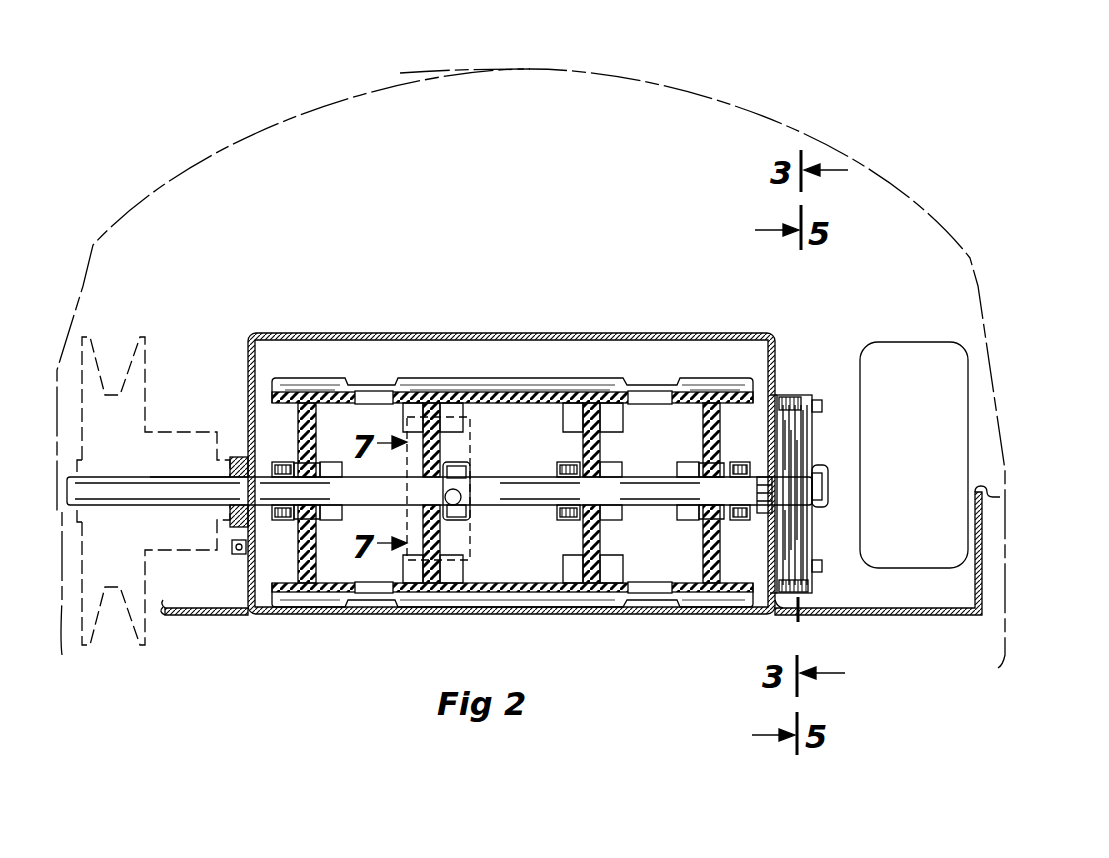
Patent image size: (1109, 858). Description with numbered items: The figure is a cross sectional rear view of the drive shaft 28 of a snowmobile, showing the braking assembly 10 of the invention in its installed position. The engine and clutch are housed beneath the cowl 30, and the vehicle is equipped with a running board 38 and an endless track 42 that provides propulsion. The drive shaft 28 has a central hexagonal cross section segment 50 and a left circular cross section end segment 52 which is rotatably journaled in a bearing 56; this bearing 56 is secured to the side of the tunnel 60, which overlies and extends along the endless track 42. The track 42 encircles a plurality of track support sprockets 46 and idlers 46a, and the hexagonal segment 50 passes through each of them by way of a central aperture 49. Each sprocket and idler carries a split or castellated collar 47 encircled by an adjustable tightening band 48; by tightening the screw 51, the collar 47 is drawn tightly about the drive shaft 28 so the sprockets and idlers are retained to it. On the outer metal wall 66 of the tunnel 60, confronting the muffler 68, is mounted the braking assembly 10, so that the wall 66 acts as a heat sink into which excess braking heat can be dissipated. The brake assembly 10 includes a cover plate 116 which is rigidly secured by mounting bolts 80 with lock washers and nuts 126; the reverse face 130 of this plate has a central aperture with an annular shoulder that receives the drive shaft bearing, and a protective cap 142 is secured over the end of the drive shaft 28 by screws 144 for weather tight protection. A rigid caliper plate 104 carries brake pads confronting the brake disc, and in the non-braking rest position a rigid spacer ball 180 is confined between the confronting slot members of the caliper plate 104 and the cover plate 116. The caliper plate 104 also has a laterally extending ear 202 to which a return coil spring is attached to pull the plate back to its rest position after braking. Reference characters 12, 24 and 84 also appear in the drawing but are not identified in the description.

The braking assembly 10 is at (805, 378).
The cabinet enclosure 12 is at (745, 72).
The drive pulley 24 is at (147, 352).
The drive shaft 28 is at (184, 468).
The cowl 30 is at (440, 70).
The running board 38 is at (883, 617).
The endless track 42 is at (525, 595).
The track support sprockets 46 is at (590, 545).
The idlers 46a is at (318, 434).
The split collar 47 is at (557, 472).
The adjustable tightening band 48 is at (345, 462).
The central aperture 49 is at (650, 495).
The central hexagonal cross section segment 50 is at (648, 503).
The tightening screw 51 is at (445, 498).
The left circular cross section end segment 52 is at (127, 506).
The bearing 56 is at (228, 513).
The tunnel 60 is at (476, 326).
The outer metal wall 66 is at (777, 352).
The muffler 68 is at (935, 342).
The mounting bolts 80 is at (818, 572).
The shaft bearing nut 84 is at (757, 517).
The caliper plate 104 is at (778, 612).
The cover plate 116 is at (830, 422).
The nuts 126 is at (818, 400).
The reverse face 130 is at (810, 505).
The protective cap 142 is at (828, 490).
The screws 144 is at (818, 472).
The spacer ball 180 is at (800, 435).
The laterally extending ear 202 is at (812, 395).